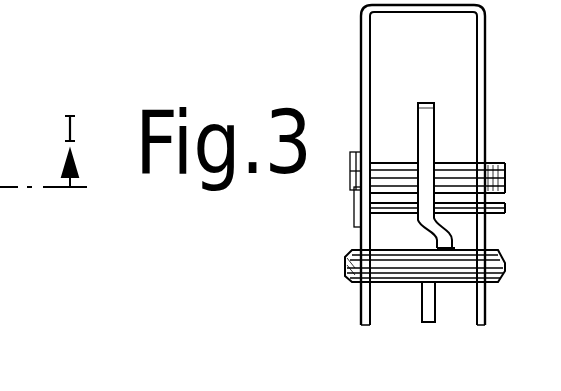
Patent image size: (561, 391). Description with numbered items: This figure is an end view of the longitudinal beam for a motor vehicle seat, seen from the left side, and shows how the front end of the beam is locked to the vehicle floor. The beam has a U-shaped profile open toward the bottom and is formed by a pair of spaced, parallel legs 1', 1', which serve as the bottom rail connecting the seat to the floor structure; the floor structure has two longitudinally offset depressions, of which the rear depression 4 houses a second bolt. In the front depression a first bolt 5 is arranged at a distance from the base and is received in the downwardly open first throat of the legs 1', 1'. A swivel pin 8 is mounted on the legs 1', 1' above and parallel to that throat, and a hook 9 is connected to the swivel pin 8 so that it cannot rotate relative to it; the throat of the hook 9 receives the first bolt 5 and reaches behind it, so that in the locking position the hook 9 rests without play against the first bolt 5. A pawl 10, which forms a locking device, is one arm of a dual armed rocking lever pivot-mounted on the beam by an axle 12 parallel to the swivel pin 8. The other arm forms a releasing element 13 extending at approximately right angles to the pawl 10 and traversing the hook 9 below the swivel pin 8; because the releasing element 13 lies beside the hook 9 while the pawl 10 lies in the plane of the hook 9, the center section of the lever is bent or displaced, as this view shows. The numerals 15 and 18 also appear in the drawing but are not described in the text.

The legs 1' is at (425, 180).
The rear depression 4 is at (229, 14).
The first bolt 5 is at (349, 285).
The swivel pin 8 is at (500, 184).
The hook 9 is at (428, 308).
The pawl 10 is at (424, 116).
The axle 12 is at (492, 216).
The releasing element 13 is at (458, 247).
The guide 15 is at (281, 14).
The stop 18 is at (333, 14).